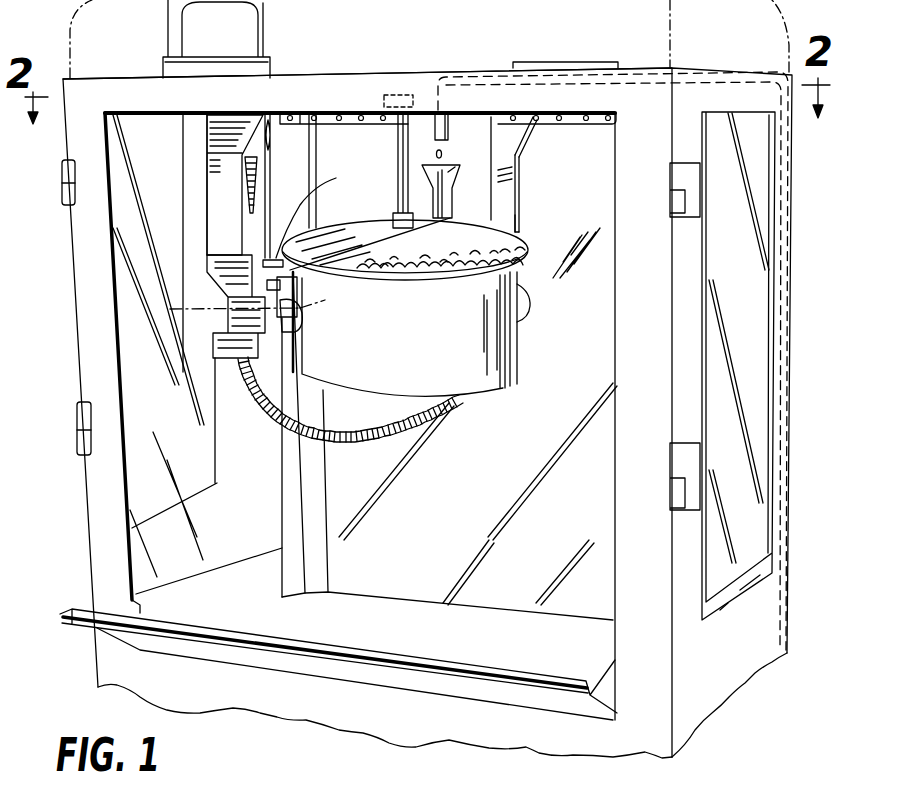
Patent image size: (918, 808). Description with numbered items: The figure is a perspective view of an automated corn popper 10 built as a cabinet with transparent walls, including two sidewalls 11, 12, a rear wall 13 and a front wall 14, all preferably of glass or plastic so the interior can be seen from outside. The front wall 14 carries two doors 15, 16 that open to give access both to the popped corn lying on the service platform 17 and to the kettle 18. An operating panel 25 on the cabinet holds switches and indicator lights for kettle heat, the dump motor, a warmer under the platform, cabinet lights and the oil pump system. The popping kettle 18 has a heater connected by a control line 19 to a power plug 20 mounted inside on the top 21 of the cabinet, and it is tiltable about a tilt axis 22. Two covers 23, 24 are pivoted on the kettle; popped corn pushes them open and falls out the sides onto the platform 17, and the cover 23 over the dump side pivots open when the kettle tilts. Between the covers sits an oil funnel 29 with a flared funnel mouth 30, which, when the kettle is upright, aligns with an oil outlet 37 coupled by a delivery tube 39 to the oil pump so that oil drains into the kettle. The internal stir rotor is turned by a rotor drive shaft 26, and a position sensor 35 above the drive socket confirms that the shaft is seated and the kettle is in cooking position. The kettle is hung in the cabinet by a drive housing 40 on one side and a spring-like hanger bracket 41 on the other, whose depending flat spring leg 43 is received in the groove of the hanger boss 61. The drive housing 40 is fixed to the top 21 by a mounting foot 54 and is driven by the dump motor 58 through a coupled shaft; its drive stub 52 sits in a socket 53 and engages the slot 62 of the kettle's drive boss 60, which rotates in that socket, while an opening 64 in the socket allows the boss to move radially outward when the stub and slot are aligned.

The automated corn popper 10 is at (768, 690).
The sidewall 11 is at (750, 650).
The sidewall 12 is at (226, 597).
The rear wall 13 is at (460, 532).
The front wall 14 is at (368, 724).
The door 15 is at (213, 483).
The door 16 is at (769, 538).
The service platform 17 is at (338, 661).
The kettle 18 is at (500, 378).
The control line 19 is at (357, 445).
The power plug 20 is at (403, 117).
The top 21 is at (380, 72).
The tilt axis 22 is at (176, 312).
The cover 23 is at (452, 184).
The cover 24 is at (326, 232).
The operating panel 25 is at (494, 124).
The rotor drive shaft 26 is at (398, 182).
The oil funnel 29 is at (439, 226).
The flared funnel mouth 30 is at (447, 173).
The position sensor 35 is at (383, 100).
The oil outlet 37 is at (528, 136).
The delivery tube 39 is at (786, 330).
The drive housing 40 is at (188, 226).
The spring-like hanger bracket 41 is at (533, 175).
The depending flat spring leg 43 is at (520, 196).
The drive stub 52 is at (242, 273).
The socket 53 is at (300, 332).
The mounting foot 54 is at (204, 120).
The dump motor 58 is at (252, 30).
The drive boss 60 is at (300, 293).
The hanger boss 61 is at (530, 283).
The slot 62 is at (320, 212).
The opening 64 is at (257, 257).